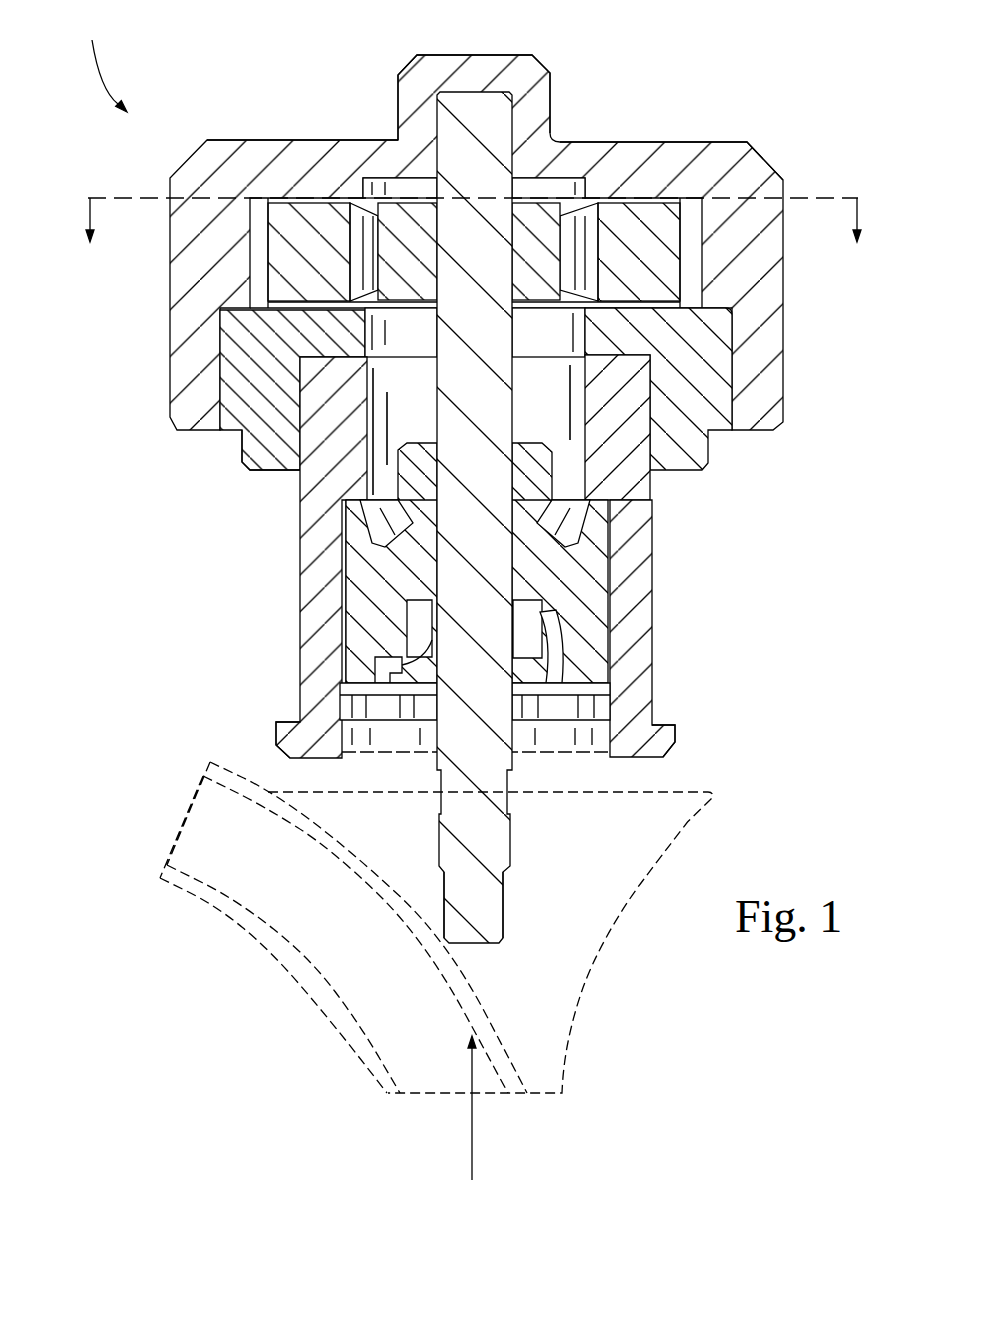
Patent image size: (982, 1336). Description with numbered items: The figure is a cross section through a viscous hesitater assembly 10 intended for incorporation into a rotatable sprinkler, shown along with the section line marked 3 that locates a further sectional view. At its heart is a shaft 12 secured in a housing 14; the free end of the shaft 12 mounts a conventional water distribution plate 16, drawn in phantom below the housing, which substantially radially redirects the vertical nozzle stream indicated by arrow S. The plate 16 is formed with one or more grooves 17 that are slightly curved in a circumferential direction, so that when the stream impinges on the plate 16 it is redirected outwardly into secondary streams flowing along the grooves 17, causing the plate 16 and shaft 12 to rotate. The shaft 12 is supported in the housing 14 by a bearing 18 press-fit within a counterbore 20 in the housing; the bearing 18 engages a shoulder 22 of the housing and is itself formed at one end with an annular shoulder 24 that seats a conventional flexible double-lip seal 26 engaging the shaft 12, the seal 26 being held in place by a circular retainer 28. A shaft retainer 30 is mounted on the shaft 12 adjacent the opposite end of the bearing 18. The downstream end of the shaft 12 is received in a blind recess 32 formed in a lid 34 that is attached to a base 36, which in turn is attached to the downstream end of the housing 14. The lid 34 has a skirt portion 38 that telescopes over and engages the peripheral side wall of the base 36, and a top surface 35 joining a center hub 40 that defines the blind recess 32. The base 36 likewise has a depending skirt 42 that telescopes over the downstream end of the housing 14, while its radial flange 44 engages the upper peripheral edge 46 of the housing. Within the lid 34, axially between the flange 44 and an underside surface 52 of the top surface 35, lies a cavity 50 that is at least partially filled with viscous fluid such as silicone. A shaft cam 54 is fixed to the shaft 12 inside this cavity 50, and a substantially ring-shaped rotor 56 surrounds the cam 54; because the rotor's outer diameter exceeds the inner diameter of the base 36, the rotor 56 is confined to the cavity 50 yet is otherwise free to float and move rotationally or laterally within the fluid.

The hesitater assembly 10 is at (98, 61).
The shaft 12 is at (490, 905).
The housing 14 is at (690, 738).
The water distribution plate 16 is at (676, 850).
The grooves 17 is at (292, 917).
The bearing 18 is at (585, 578).
The counterbore 20 is at (350, 621).
The shoulder 22 is at (340, 522).
The annular shoulder 24 is at (375, 668).
The flexible double-lip seal 26 is at (560, 655).
The circular retainer 28 is at (610, 692).
The shaft retainer 30 is at (540, 465).
The blind recess 32 is at (438, 130).
The lid 34 is at (632, 136).
The top surface 35 is at (305, 140).
The base 36 is at (226, 461).
The skirt portion 38 is at (785, 368).
The center hub 40 is at (398, 90).
The depending skirt 42 is at (655, 405).
The radial flange 44 is at (612, 320).
The upper peripheral edge 46 is at (300, 343).
The cavity 50 is at (695, 303).
The underside surface 52 is at (650, 255).
The shaft cam 54 is at (537, 217).
The ring-shaped rotor 56 is at (693, 275).
The section line 3- 3 is at (476, 220).
The arrow S is at (482, 1127).